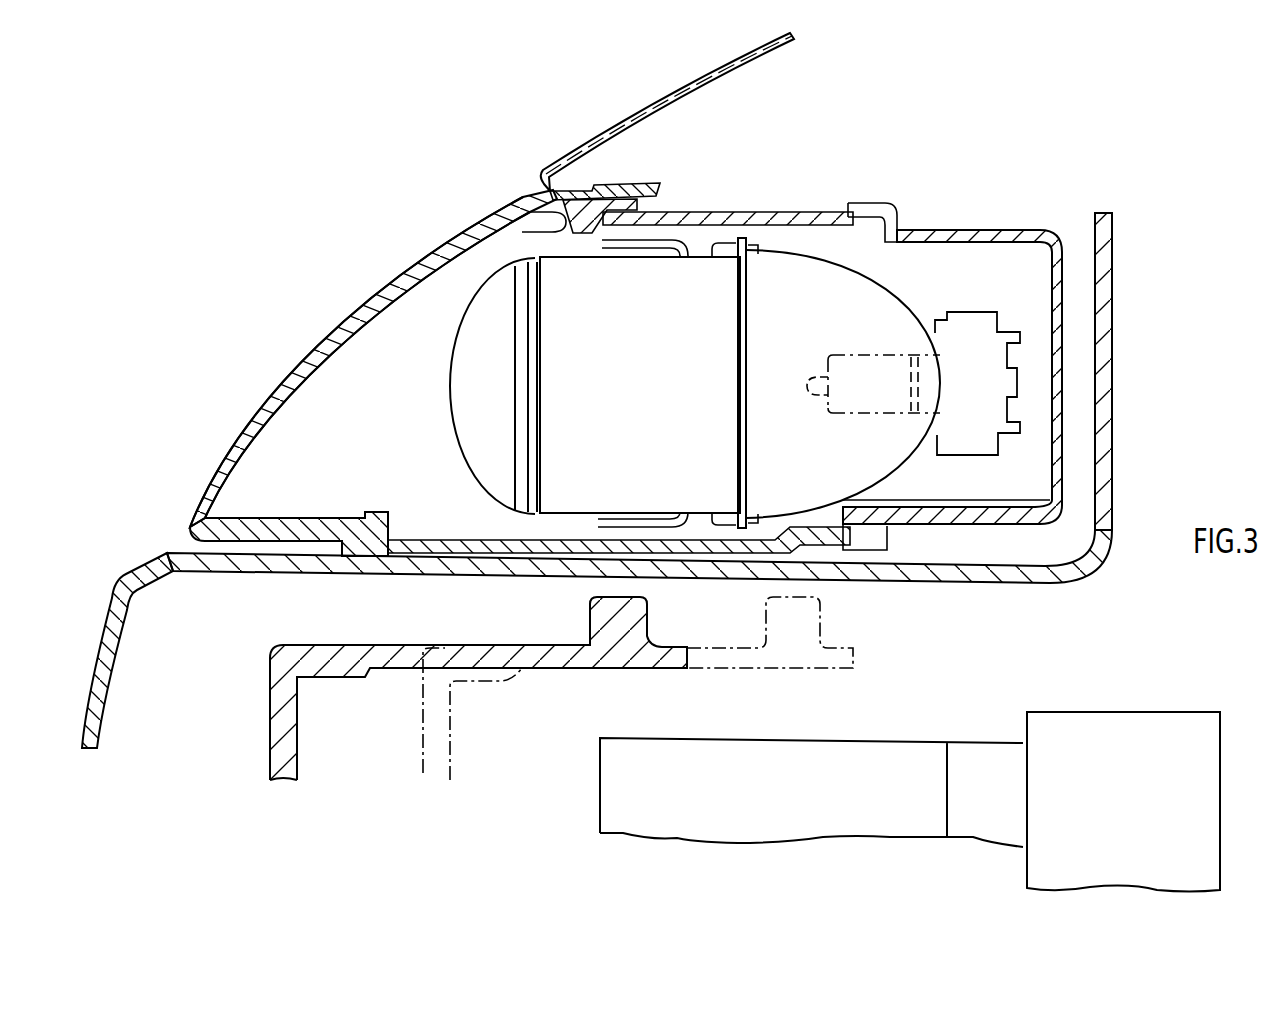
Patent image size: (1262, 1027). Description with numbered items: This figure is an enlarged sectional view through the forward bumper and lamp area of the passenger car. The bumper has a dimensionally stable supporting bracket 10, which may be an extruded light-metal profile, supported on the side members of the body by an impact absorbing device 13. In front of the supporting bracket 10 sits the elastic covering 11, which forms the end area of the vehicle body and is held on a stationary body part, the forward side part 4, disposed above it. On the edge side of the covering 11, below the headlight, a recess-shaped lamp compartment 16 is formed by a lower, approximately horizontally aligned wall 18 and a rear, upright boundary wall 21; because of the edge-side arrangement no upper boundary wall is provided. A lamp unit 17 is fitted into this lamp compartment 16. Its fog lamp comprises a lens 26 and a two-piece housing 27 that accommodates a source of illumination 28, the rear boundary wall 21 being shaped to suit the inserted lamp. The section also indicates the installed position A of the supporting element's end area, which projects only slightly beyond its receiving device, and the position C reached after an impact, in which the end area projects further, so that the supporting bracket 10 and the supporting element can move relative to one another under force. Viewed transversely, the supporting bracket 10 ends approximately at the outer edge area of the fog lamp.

The forward side part 4 is at (722, 66).
The two-piece housing 27 is at (905, 226).
The lamp unit 17 is at (358, 308).
The lens 26 is at (334, 342).
The source of illumination 28 is at (456, 428).
The lamp compartment 16 is at (178, 526).
The rear boundary wall 21 is at (1100, 352).
The lower wall 18 is at (547, 575).
The elastic covering 11 is at (100, 636).
The supporting bracket 10 is at (273, 731).
The impact absorbing device 13 is at (935, 733).
The installed position A is at (269, 758).
The position after impact C is at (422, 749).